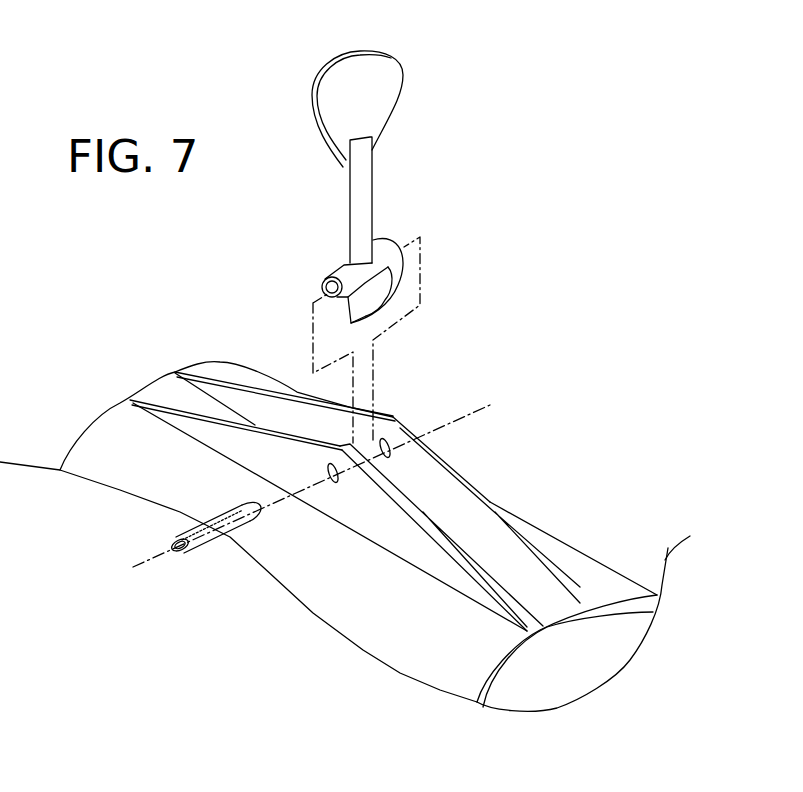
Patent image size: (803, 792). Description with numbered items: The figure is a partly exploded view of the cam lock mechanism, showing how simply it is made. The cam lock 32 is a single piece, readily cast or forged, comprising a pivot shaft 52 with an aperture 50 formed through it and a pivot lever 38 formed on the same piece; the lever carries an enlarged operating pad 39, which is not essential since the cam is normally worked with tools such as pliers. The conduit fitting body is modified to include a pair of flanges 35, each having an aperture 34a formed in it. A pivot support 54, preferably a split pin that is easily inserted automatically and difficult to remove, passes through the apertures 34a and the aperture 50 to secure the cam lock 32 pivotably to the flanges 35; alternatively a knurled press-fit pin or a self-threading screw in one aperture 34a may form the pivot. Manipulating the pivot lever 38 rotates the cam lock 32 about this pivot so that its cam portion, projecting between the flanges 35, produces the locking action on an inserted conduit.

The cam lock 32 is at (370, 187).
The apertures 34a is at (391, 441).
The flanges 35 is at (467, 487).
The pivot lever 38 is at (352, 192).
The operating pad 39 is at (391, 84).
The aperture 50 is at (322, 282).
The pivot shaft 52 is at (392, 240).
The pivot support 54 is at (177, 533).